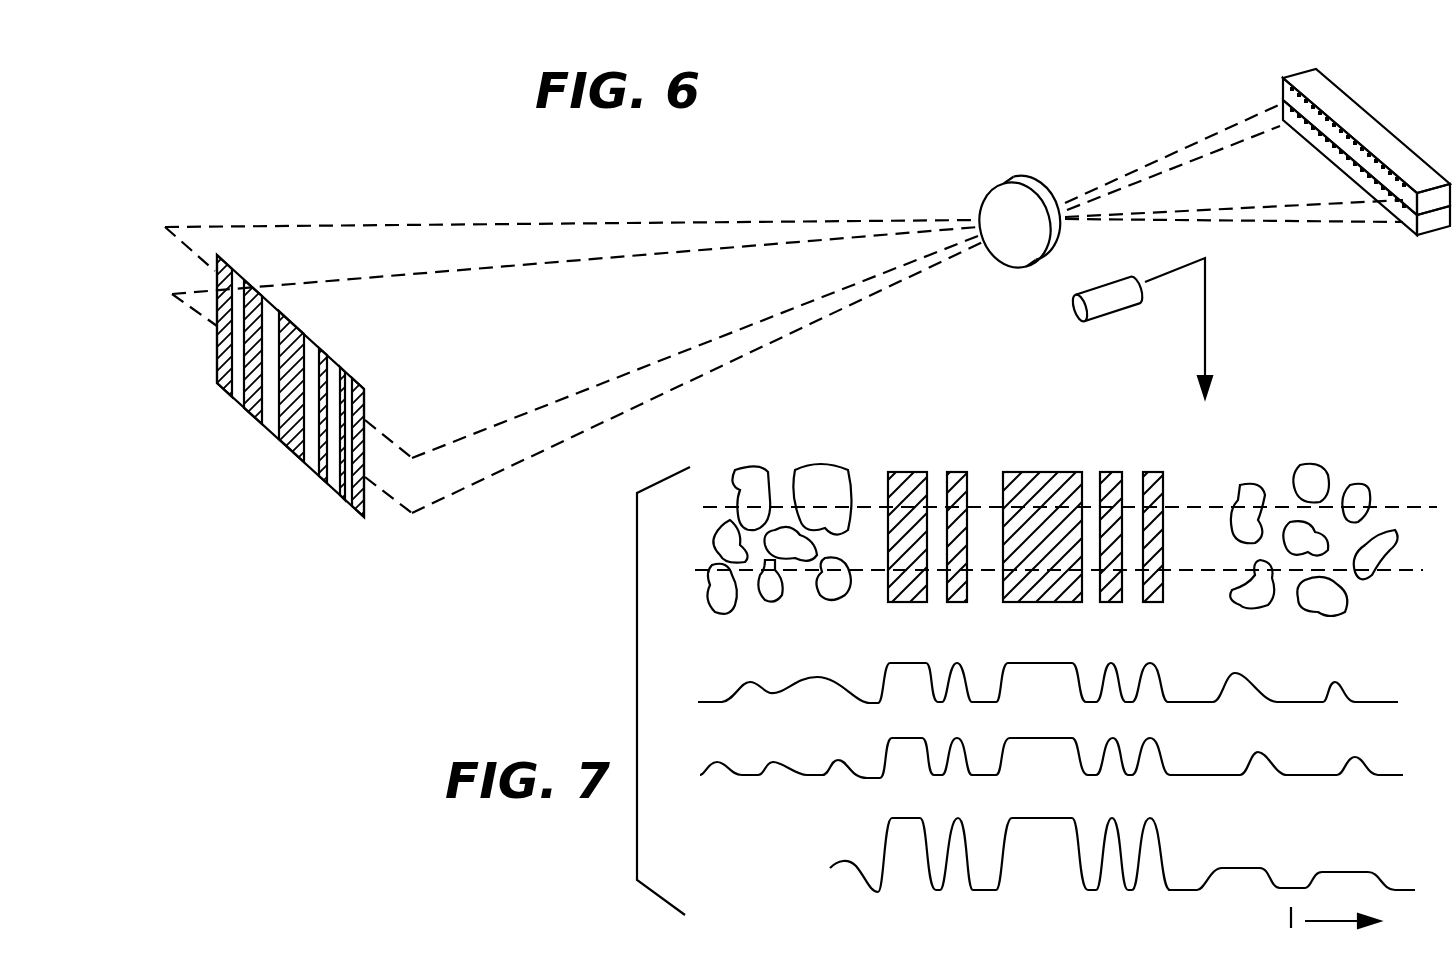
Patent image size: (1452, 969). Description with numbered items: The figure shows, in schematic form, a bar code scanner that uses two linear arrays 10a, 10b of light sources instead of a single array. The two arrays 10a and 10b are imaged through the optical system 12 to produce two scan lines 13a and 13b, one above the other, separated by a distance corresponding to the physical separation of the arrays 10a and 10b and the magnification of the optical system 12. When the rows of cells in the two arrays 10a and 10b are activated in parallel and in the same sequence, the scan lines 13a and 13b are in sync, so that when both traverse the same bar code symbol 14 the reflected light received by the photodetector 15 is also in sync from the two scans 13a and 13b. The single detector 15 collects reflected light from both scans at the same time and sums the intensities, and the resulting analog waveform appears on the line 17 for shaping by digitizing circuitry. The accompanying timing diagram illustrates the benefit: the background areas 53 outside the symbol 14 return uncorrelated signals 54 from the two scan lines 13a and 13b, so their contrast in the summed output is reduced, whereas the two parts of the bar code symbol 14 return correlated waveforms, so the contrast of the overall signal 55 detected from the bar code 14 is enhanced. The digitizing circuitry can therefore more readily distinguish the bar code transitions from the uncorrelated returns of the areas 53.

In FIG. 6, the linear array 10a is at (1318, 85).
In FIG. 6, the linear array 10b is at (1433, 230).
In FIG. 6, the optical system 12 is at (1008, 183).
In FIG. 6, the scan line 13a is at (180, 323).
In FIG. 7, the scan line 13a is at (1217, 570).
In FIG. 6, the scan line 13b is at (255, 227).
In FIG. 7, the scan line 13b is at (1198, 505).
In FIG. 6, the bar code symbol 14 is at (277, 437).
In FIG. 7, the bar code symbol 14 is at (943, 610).
In FIG. 6, the photodetector 15 is at (1113, 303).
In FIG. 6, the line 17 is at (1207, 312).
In FIG. 7, the background areas 53 is at (800, 580).
In FIG. 7, the uncorrelated signals 54 is at (760, 768).
In FIG. 7, the overall signal 55 is at (1168, 841).